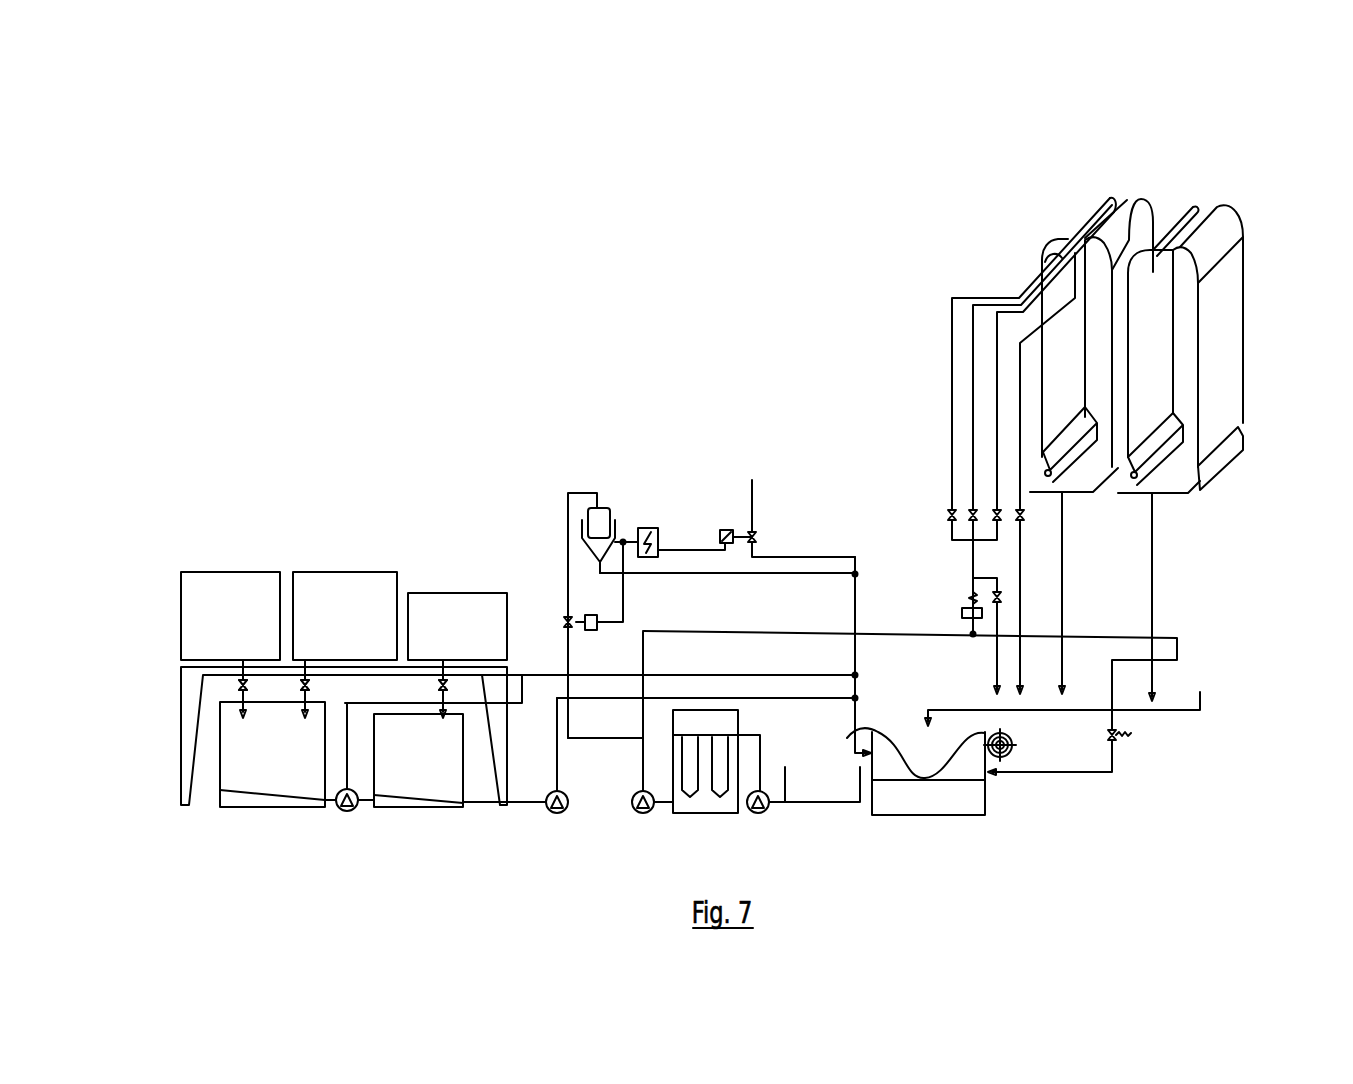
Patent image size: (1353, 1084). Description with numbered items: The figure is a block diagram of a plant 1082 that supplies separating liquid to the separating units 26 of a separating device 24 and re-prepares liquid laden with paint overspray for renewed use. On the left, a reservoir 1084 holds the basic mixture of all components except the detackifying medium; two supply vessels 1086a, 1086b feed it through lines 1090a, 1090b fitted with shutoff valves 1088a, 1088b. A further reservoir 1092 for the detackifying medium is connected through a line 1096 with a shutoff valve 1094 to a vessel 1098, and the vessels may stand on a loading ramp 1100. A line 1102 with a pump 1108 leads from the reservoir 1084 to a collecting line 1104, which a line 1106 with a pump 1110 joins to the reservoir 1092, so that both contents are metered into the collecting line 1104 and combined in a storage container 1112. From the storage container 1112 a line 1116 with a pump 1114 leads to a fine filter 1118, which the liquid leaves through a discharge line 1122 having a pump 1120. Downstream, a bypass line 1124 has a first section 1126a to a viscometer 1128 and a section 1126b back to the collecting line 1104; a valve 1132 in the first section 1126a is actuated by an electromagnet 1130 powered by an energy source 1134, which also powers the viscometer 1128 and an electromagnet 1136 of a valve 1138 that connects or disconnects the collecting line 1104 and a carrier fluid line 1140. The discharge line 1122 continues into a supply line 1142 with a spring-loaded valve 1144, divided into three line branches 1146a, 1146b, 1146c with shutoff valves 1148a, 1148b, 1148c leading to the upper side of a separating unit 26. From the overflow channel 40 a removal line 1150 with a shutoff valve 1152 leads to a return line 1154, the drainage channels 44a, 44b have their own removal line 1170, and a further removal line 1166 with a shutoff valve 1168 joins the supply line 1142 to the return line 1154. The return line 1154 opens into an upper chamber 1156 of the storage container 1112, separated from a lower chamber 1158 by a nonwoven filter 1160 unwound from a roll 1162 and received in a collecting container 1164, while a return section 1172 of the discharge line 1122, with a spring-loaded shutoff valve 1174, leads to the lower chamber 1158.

The separating device 24 is at (1017, 158).
The separating unit 26 is at (1122, 169).
The overflow channel 40 is at (1100, 192).
The drainage channel 44a is at (1160, 478).
The drainage channel 44b is at (1237, 468).
The plant 1082 is at (540, 322).
The reservoir 1084 is at (270, 778).
The vessel 1086a is at (222, 602).
The vessel 1086b is at (330, 592).
The shutoff valve 1088a is at (242, 688).
The shutoff valve 1088b is at (310, 688).
The line 1090a is at (242, 658).
The line 1090b is at (305, 666).
The reservoir 1092 is at (416, 790).
The shutoff valve 1094 is at (444, 690).
The line 1096 is at (441, 668).
The vessel 1098 is at (475, 607).
The loading ramp 1100 is at (528, 672).
The line 1102 is at (748, 676).
The collecting line 1104 is at (850, 676).
The line 1106 is at (822, 698).
The pump 1108 is at (347, 812).
The pump 1110 is at (556, 813).
The storage container 1112 is at (986, 800).
The pump 1114 is at (762, 813).
The line 1116 is at (876, 816).
The fine filter 1118 is at (680, 810).
The pump 1120 is at (636, 790).
The discharge line 1122 is at (864, 630).
The bypass line 1124 is at (570, 664).
The first section 1126a is at (569, 492).
The section 1126b is at (688, 572).
The viscometer 1128 is at (603, 506).
The electromagnet 1130 is at (600, 627).
The valve 1132 is at (566, 616).
The energy source 1134 is at (647, 527).
The electromagnet 1136 is at (722, 530).
The valve 1138 is at (758, 537).
The line 1140 is at (752, 490).
The supply line 1142 is at (950, 550).
The spring-loaded valve 1144 is at (961, 608).
The line branch 1146a is at (952, 338).
The line branch 1146b is at (972, 378).
The line branch 1146c is at (996, 413).
The shutoff valve 1148a is at (952, 510).
The shutoff valve 1148b is at (997, 509).
The shutoff valve 1148c is at (973, 483).
The removal line 1150 is at (1022, 556).
The shutoff valve 1152 is at (1025, 510).
The return line 1154 is at (1170, 712).
The upper chamber 1156 is at (900, 768).
The lower chamber 1158 is at (897, 812).
The filter 1160 is at (958, 815).
The roll 1162 is at (1013, 742).
The collecting container 1164 is at (786, 768).
The removal line 1166 is at (996, 650).
The shutoff valve 1168 is at (1001, 598).
The removal line 1170 is at (1064, 586).
The return section 1172 is at (1178, 650).
The spring-loaded shutoff valve 1174 is at (1120, 748).